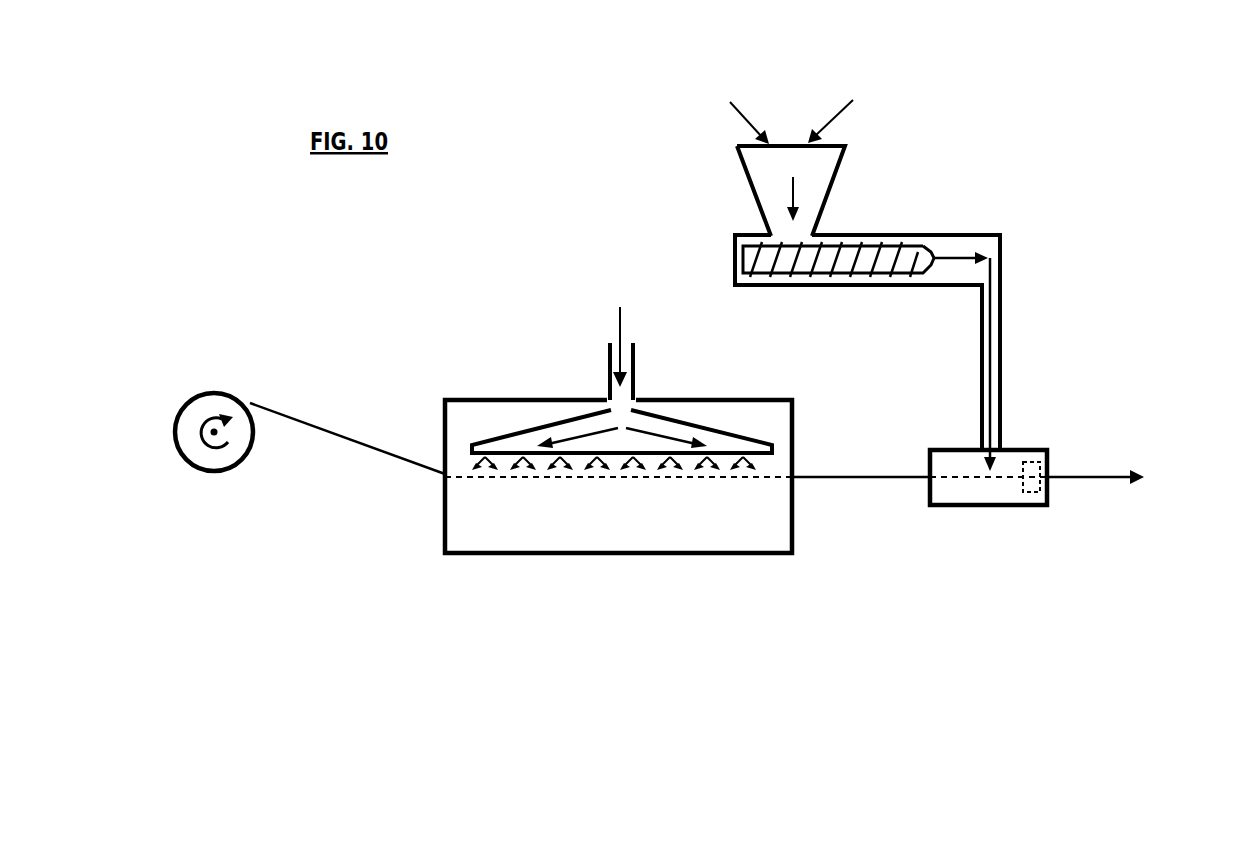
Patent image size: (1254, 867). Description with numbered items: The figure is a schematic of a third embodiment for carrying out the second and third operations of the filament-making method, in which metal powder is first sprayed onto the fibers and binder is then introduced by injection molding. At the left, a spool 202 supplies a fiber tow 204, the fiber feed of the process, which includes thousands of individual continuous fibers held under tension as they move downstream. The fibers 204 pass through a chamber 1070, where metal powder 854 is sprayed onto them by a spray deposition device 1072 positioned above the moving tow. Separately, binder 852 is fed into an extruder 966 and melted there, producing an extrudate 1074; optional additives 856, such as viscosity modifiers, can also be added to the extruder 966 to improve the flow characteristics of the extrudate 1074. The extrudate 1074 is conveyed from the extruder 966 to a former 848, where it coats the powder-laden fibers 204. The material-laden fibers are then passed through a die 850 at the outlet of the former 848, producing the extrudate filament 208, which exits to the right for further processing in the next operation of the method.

The spool 202 is at (237, 465).
The fiber tow 204 is at (258, 405).
The extrudate filament 208 is at (1093, 476).
The former 848 is at (943, 505).
The die 850 is at (1035, 495).
The binder 852 is at (733, 93).
The metal powder 854 is at (622, 307).
The optional additives 856 is at (886, 94).
The extruder 966 is at (860, 233).
The powder deposition chamber 1070 is at (512, 398).
The spray deposition device 1072 is at (693, 427).
The extrudate 1074 is at (963, 258).